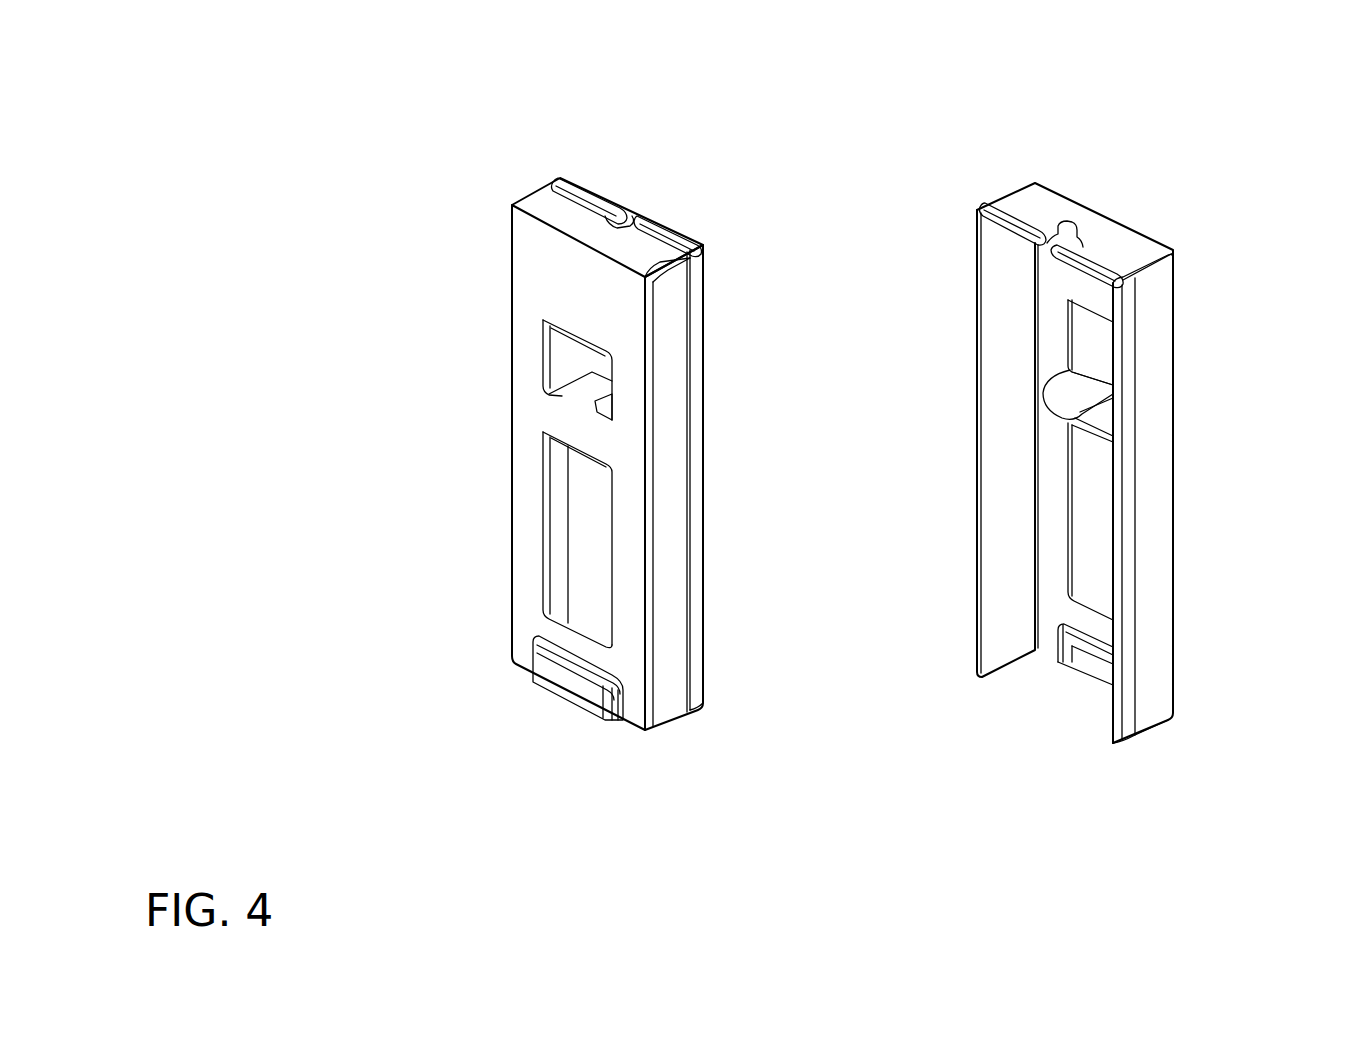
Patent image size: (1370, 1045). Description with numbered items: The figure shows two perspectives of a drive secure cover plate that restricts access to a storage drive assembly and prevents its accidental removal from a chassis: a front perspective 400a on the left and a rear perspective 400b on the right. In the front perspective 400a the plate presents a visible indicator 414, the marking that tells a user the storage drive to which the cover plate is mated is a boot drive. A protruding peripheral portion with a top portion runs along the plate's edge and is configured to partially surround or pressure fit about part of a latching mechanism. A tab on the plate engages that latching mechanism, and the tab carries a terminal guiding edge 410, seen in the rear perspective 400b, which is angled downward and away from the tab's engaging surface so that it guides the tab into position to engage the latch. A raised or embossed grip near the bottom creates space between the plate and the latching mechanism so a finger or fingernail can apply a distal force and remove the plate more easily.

The front perspective 400a is at (472, 128).
The rear perspective 400b is at (947, 132).
The terminal guiding edge 410 is at (1078, 411).
The visible indicator 414 is at (522, 246).